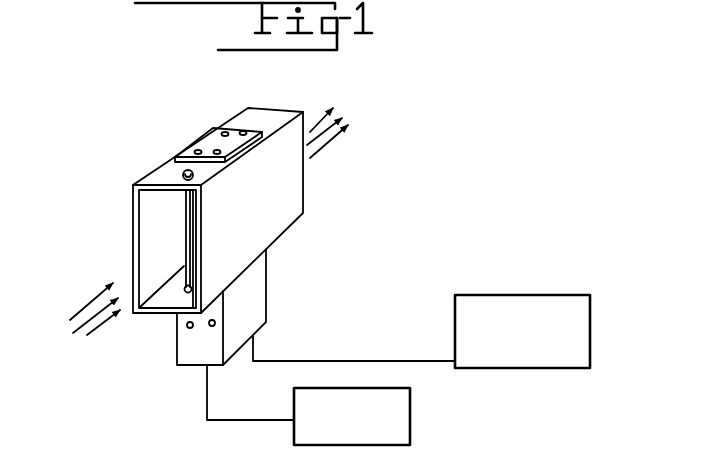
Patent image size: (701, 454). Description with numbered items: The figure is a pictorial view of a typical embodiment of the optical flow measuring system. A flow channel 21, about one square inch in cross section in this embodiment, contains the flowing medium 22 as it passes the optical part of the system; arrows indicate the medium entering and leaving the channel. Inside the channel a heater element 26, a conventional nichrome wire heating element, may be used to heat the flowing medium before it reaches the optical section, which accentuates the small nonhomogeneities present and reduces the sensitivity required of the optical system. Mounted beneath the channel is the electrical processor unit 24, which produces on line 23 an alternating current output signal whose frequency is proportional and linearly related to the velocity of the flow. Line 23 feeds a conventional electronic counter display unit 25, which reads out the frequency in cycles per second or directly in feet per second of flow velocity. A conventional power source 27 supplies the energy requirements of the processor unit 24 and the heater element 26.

The flow channel 21 is at (167, 168).
The flowing medium 22 is at (380, 113).
The output signal line 23 is at (310, 361).
The electrical processor unit 24 is at (267, 285).
The counter display unit 25 is at (518, 294).
The heater element 26 is at (182, 227).
The power source 27 is at (410, 420).